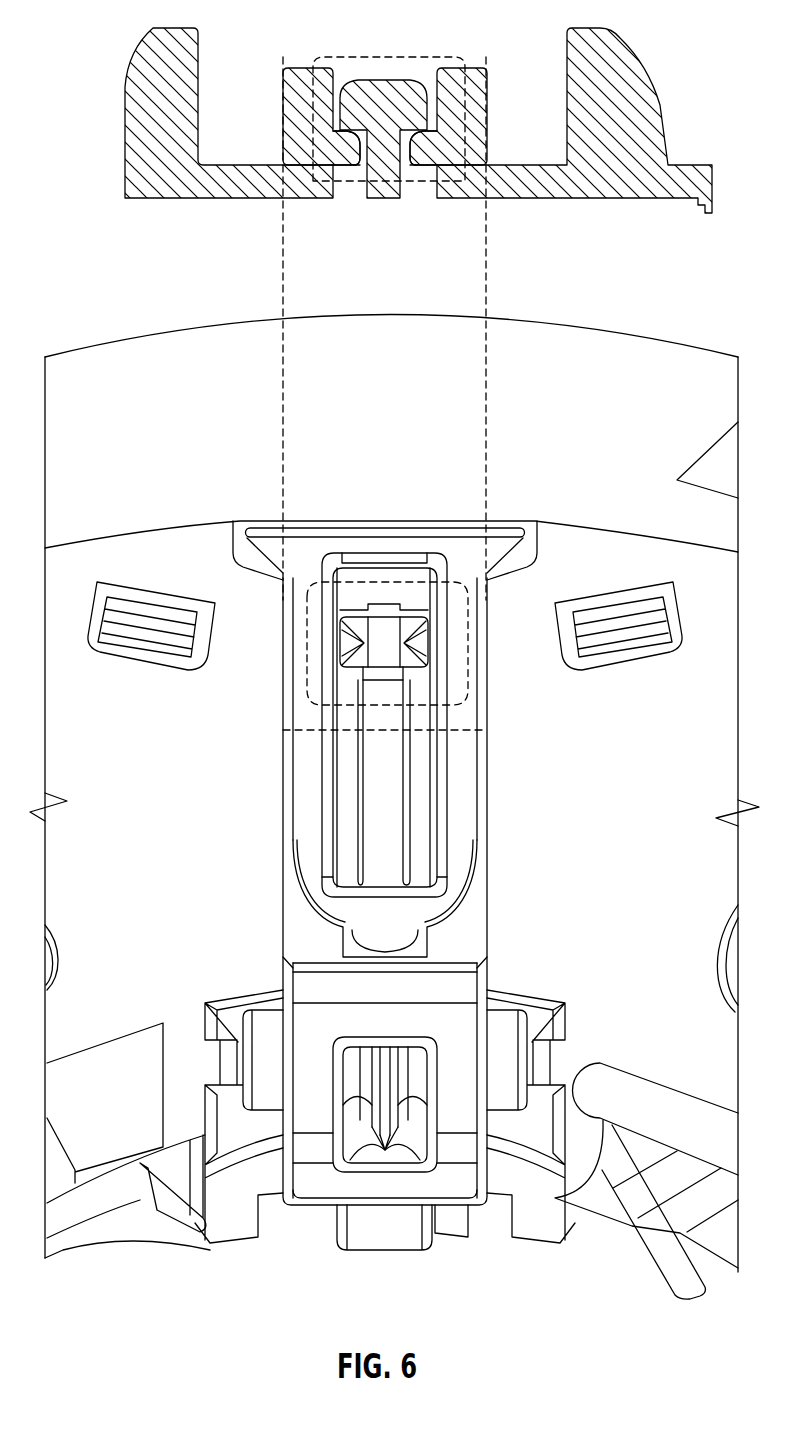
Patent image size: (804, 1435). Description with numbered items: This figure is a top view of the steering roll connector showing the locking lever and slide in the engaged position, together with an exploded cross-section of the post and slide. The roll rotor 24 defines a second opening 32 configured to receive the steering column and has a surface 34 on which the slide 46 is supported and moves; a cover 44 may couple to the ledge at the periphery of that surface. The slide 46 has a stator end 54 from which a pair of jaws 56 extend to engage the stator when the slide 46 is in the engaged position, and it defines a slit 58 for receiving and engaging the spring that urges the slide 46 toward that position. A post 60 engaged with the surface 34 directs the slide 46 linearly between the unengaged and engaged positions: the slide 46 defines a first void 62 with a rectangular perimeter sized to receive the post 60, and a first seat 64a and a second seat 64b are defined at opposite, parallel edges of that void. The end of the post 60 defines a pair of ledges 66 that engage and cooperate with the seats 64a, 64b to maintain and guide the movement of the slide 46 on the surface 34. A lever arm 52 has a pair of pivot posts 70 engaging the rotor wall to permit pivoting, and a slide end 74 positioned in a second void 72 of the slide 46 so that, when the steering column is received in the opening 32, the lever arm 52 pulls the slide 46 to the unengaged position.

The roll rotor 24 is at (150, 65).
The second opening 32 is at (705, 1262).
The surface 34 is at (520, 165).
The cover 44 is at (583, 357).
The slide 46 is at (458, 820).
The lever arm 52 is at (407, 1233).
The stator end 54 is at (487, 577).
The pair of jaws 56 is at (283, 577).
The slit 58 is at (345, 913).
The post 60 is at (377, 90).
The first void 62 is at (340, 77).
The first seat 64a is at (353, 166).
The second seat 64b is at (417, 166).
The pair of ledges 66 is at (343, 133).
The pivot post 70 is at (263, 1050).
The second void 72 is at (342, 1173).
The slide end 74 is at (384, 1151).